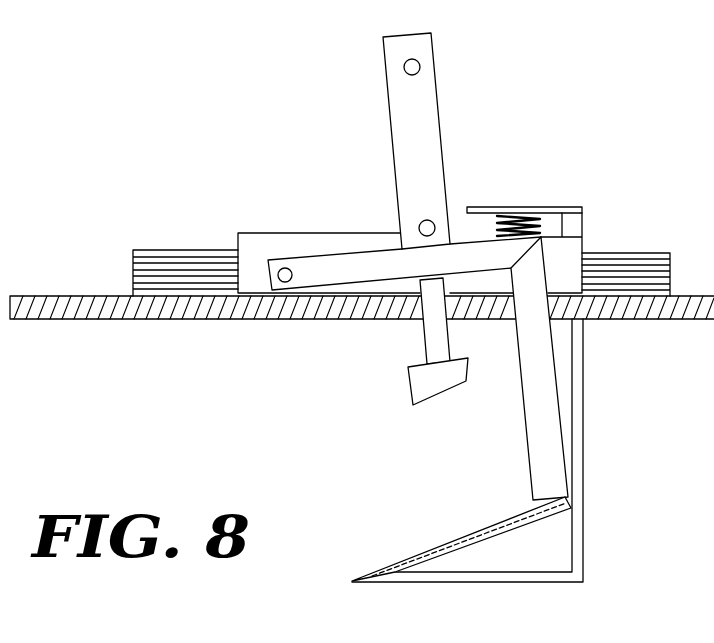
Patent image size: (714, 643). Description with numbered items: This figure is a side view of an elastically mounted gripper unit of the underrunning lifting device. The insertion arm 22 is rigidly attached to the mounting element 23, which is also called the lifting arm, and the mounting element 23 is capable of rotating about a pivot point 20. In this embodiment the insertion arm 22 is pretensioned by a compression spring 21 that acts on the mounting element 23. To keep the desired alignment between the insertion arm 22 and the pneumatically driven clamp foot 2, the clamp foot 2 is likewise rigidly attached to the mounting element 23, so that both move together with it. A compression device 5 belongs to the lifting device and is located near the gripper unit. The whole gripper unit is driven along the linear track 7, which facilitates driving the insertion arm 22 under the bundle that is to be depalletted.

The clamp foot 2 is at (412, 145).
The compression device 5 is at (584, 527).
The linear track 7 is at (613, 276).
The pivot point 20 is at (287, 268).
The compression spring 21 is at (520, 207).
The insertion arm 22 is at (470, 532).
The mounting element 23 is at (540, 415).